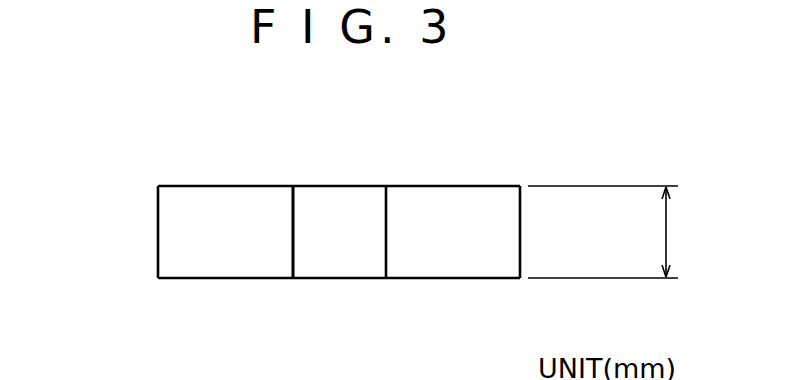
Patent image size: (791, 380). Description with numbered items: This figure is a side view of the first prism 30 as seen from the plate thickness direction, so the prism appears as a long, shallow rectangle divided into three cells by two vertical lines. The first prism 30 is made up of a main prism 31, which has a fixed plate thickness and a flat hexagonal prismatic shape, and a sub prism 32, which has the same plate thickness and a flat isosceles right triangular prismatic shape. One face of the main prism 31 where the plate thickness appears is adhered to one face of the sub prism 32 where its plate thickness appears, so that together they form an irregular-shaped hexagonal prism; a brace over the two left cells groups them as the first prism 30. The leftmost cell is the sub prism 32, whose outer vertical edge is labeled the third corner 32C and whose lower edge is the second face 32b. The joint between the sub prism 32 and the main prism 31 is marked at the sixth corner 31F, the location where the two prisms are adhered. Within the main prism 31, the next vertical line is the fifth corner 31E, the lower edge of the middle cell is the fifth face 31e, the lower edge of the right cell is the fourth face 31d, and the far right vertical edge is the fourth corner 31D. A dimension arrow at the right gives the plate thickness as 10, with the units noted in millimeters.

The first prism 30 is at (378, 142).
The sub prism 32 is at (228, 200).
The main prism 31 is at (335, 200).
The third corner 32C is at (158, 233).
The second face 32b is at (223, 258).
The sixth corner 31F is at (293, 235).
The fifth face 31e is at (347, 258).
The fifth corner 31E is at (386, 235).
The fourth face 31d is at (473, 258).
The fourth corner 31D is at (524, 232).
The dimension (10 mm) 10 is at (619, 232).